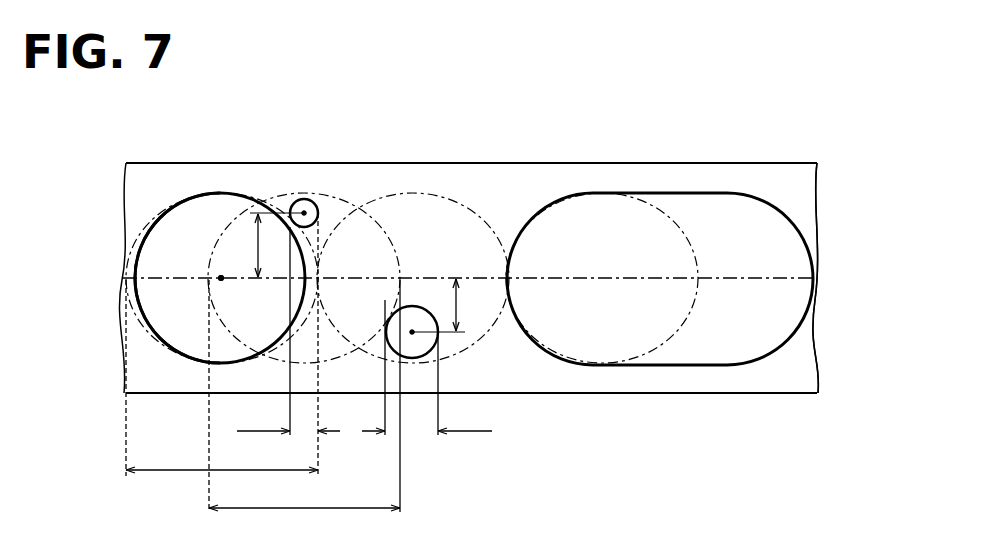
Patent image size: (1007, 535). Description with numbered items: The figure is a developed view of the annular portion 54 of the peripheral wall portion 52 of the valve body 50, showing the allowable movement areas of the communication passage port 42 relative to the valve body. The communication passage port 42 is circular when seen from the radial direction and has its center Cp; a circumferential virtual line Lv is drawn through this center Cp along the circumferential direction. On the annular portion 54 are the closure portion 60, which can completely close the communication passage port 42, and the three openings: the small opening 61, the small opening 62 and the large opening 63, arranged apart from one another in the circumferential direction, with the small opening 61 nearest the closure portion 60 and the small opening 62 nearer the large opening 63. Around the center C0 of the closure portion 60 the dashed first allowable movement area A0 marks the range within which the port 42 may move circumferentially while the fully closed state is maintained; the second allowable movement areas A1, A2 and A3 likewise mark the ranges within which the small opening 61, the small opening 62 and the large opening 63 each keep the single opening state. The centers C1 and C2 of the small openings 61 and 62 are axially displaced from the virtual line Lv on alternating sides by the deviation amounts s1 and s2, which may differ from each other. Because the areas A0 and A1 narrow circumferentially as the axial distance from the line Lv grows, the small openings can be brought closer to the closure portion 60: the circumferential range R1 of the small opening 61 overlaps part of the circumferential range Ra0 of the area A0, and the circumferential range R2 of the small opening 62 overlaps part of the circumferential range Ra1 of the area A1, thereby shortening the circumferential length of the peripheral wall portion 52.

The valve body 50 is at (158, 163).
The peripheral wall portion 52 is at (538, 163).
The annular portion 54 is at (800, 187).
The communication passage port 42 is at (140, 245).
The closure portion 60 is at (163, 267).
The small opening 61 is at (313, 202).
The small opening 62 is at (432, 310).
The large opening 63 is at (709, 193).
The first allowable movement area A0 is at (157, 203).
The second allowable movement area A1 is at (280, 195).
The second allowable movement area A2 is at (477, 214).
The second allowable movement area A3 is at (668, 216).
The center of closure portion C0 is at (220, 275).
The center of communication passage port Cp is at (213, 201).
The center of small opening C1 is at (302, 210).
The center of small opening C2 is at (411, 329).
The circumferential virtual line Lv is at (773, 277).
The amount of deviation s1 is at (265, 245).
The amount of deviation s2 is at (448, 305).
The circumferential range R1 is at (288, 344).
The circumferential range R2 is at (427, 367).
The circumferential range Ra0 is at (222, 378).
The circumferential range Ra1 is at (304, 396).